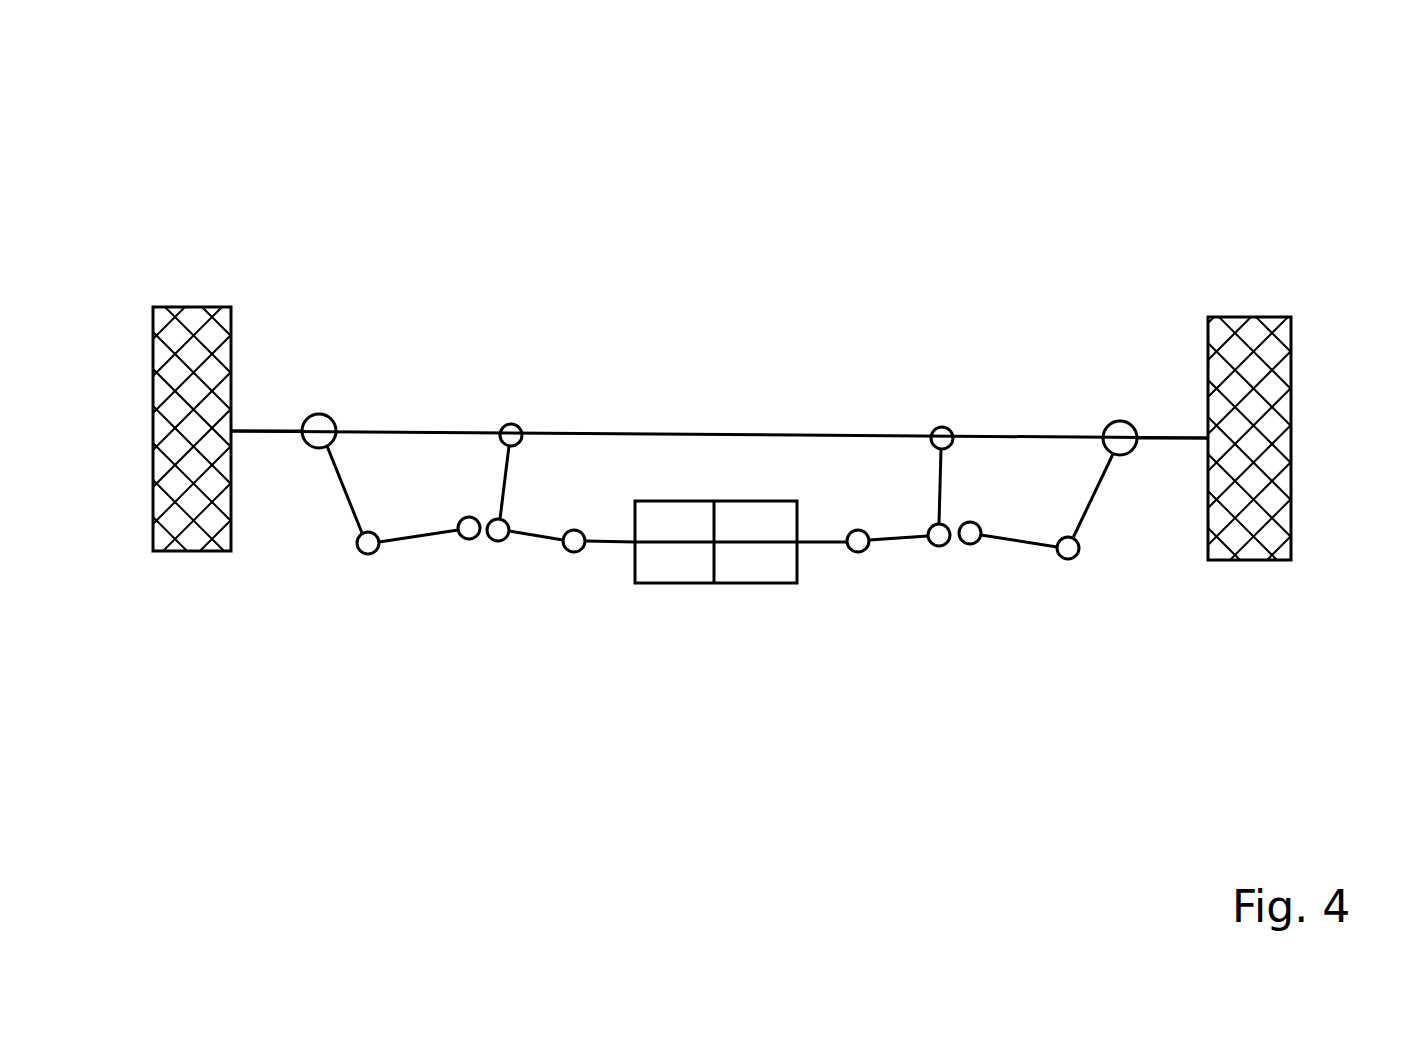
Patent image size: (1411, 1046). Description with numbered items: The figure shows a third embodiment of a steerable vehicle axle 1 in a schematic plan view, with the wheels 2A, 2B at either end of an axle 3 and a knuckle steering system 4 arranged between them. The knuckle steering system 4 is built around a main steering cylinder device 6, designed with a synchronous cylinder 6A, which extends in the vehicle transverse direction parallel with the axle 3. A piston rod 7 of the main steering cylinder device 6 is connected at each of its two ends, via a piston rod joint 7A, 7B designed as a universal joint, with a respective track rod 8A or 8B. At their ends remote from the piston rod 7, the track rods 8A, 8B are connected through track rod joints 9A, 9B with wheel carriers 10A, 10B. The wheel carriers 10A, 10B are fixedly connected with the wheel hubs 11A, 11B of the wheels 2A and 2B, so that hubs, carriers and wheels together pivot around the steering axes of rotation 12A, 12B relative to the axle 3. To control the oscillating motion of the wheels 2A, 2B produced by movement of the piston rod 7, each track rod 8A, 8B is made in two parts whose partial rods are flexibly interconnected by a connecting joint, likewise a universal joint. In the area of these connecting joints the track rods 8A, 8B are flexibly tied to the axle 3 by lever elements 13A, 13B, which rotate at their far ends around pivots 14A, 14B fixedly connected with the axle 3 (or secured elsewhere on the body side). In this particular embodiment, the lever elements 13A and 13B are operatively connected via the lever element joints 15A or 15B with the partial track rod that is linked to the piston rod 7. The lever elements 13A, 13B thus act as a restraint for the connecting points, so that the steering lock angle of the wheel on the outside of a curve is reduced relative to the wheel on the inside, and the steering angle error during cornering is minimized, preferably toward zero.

The vehicle axle 1 is at (170, 188).
The wheel 2A is at (192, 412).
The wheel 2B is at (1253, 423).
The axle 3 is at (780, 432).
The knuckle steering system 4 is at (597, 648).
The main steering cylinder device 6 is at (745, 600).
The synchronous cylinder 6A is at (675, 565).
The piston rod 7 is at (820, 552).
The piston rod joint 7A is at (573, 552).
The piston rod joint 7B is at (860, 553).
The track rod 8A is at (424, 588).
The track rod 8B is at (1039, 609).
The track rod joint 9A is at (357, 542).
The track rod joint 9B is at (1078, 550).
The wheel carrier 10A is at (342, 493).
The wheel carrier 10B is at (1087, 522).
The wheel hub 11A is at (250, 425).
The wheel hub 11B is at (1157, 437).
The steering axis of rotation 12A is at (315, 420).
The steering axis of rotation 12B is at (1112, 420).
The lever element 13A is at (505, 493).
The lever element 13B is at (945, 493).
The pivot 14A is at (509, 424).
The pivot 14B is at (939, 427).
The lever element joint 15A is at (498, 545).
The lever element joint 15B is at (947, 547).